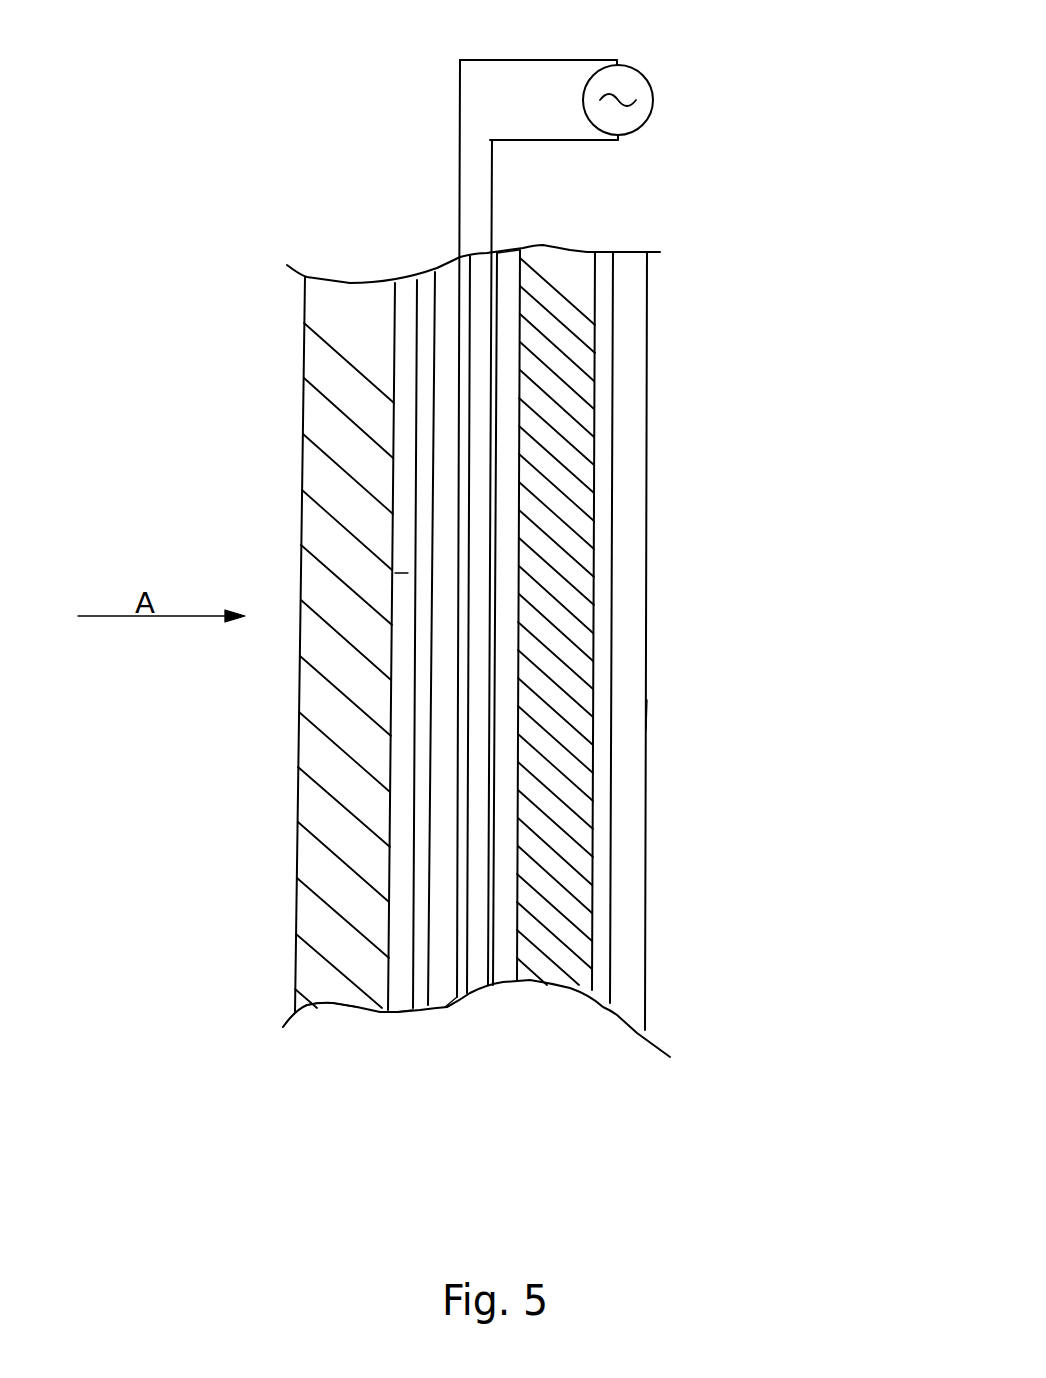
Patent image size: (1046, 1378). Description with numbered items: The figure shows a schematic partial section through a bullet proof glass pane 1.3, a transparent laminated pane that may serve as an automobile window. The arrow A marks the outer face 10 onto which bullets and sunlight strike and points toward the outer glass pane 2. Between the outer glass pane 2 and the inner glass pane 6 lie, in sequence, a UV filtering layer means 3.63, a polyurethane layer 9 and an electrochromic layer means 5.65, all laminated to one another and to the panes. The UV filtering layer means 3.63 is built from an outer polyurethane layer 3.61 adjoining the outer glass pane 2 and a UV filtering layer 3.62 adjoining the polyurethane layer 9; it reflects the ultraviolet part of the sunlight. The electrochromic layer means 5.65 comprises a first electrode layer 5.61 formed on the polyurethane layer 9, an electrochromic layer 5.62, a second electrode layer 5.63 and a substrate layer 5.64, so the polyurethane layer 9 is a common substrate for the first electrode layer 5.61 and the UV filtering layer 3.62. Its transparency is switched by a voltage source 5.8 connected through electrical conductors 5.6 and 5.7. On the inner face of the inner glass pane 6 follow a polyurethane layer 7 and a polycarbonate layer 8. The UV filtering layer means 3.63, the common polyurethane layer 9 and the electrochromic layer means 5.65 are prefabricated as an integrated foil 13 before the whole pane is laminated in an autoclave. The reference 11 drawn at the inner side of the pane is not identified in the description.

The bullet proof glass pane 1.3 is at (245, 1088).
The outer glass pane 2 is at (330, 1005).
The outer polyurethane layer 3.61 is at (403, 283).
The UV filtering layer 3.62 is at (425, 283).
The UV filtering layer means 3.63 is at (398, 1003).
The electrical conductor 5.6 is at (510, 60).
The first electrode layer 5.61 is at (462, 993).
The electrochromic layer 5.62 is at (477, 988).
The second electrode layer 5.63 is at (492, 985).
The substrate layer 5.64 is at (505, 982).
The electrochromic layer means 5.65 is at (458, 260).
The electrical conductor 5.7 is at (557, 140).
The voltage source 5.8 is at (648, 112).
The inner glass pane 6 is at (552, 963).
The polyurethane layer 7 is at (597, 990).
The polycarbonate layer 8 is at (633, 965).
The polyurethane layer 9 is at (445, 1013).
The outer face 10 is at (282, 805).
The outer surface 11 is at (660, 708).
The integrated foil 13 is at (503, 277).